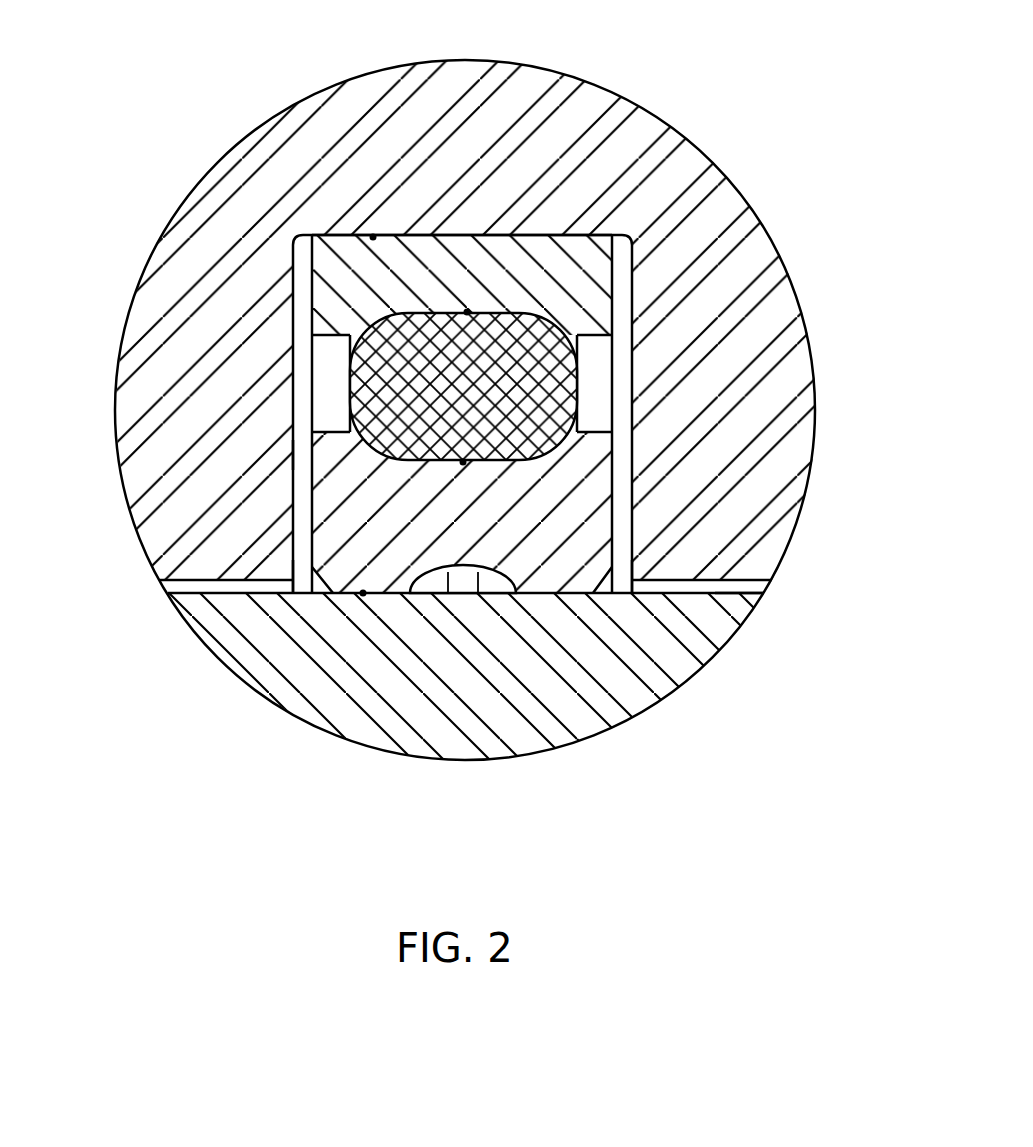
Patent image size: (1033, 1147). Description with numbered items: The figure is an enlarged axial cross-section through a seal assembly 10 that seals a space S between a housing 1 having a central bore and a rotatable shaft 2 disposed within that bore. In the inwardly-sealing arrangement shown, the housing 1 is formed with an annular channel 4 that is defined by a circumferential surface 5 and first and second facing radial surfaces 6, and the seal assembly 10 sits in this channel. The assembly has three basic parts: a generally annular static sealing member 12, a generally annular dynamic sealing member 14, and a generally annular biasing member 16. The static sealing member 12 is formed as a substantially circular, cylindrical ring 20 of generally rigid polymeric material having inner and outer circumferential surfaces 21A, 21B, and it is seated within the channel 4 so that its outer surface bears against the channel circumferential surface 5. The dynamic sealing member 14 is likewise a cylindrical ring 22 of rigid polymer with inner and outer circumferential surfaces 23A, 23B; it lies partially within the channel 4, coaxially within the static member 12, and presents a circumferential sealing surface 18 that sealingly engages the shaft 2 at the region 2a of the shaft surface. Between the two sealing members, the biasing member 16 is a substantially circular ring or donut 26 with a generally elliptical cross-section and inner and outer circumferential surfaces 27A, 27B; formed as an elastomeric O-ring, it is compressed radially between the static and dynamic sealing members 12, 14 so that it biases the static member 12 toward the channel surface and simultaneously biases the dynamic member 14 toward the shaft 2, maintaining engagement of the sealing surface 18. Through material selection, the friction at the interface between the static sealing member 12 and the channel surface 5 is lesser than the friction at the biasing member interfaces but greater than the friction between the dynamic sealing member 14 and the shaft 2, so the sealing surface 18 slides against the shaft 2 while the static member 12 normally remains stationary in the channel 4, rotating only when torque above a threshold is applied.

The housing 1 is at (735, 203).
The shaft 2 is at (243, 675).
The shaft surface portion 2a is at (750, 586).
The annular channel 4 is at (302, 452).
The circumferential surface 5 is at (445, 238).
The radial surfaces 6 is at (298, 316).
The seal assembly 10 is at (215, 405).
The static sealing member 12 is at (634, 285).
The dynamic sealing member 14 is at (627, 512).
The biasing member 16 is at (605, 382).
The circumferential sealing surface 18 is at (550, 600).
The cylindrical ring 20 is at (308, 290).
The cylindrical ring 22 is at (323, 508).
The ring 26 is at (350, 373).
The inner circumferential surface 21A is at (538, 322).
The outer circumferential surface 21B is at (425, 255).
The inner circumferential surface 23A is at (380, 593).
The outer circumferential surface 23B is at (510, 462).
The inner circumferential surface 27A is at (433, 462).
The outer circumferential surface 27B is at (533, 322).
The space S is at (195, 588).